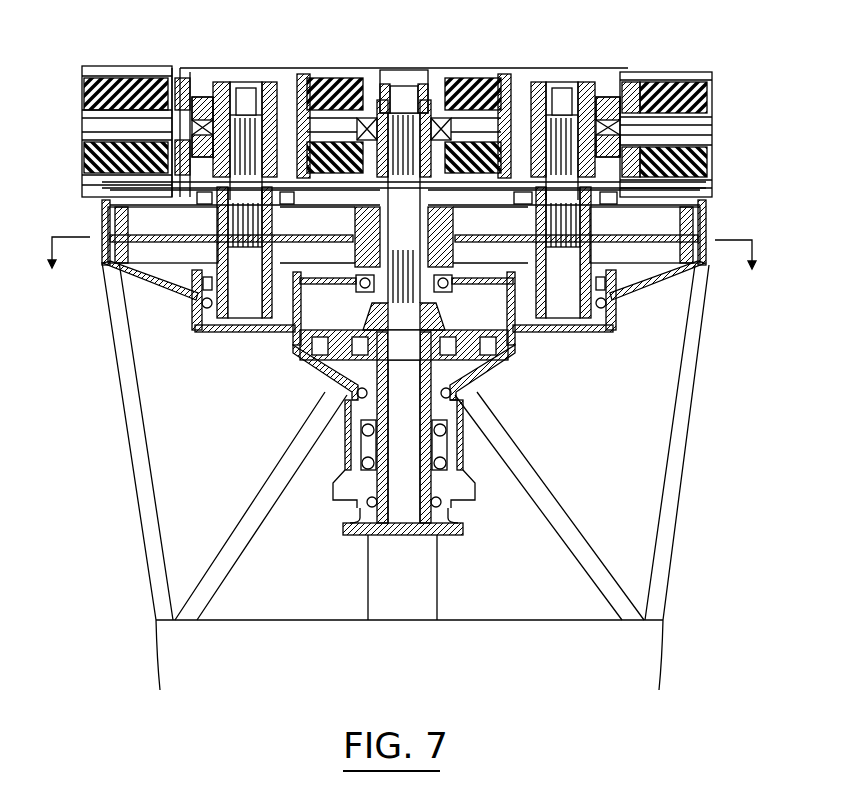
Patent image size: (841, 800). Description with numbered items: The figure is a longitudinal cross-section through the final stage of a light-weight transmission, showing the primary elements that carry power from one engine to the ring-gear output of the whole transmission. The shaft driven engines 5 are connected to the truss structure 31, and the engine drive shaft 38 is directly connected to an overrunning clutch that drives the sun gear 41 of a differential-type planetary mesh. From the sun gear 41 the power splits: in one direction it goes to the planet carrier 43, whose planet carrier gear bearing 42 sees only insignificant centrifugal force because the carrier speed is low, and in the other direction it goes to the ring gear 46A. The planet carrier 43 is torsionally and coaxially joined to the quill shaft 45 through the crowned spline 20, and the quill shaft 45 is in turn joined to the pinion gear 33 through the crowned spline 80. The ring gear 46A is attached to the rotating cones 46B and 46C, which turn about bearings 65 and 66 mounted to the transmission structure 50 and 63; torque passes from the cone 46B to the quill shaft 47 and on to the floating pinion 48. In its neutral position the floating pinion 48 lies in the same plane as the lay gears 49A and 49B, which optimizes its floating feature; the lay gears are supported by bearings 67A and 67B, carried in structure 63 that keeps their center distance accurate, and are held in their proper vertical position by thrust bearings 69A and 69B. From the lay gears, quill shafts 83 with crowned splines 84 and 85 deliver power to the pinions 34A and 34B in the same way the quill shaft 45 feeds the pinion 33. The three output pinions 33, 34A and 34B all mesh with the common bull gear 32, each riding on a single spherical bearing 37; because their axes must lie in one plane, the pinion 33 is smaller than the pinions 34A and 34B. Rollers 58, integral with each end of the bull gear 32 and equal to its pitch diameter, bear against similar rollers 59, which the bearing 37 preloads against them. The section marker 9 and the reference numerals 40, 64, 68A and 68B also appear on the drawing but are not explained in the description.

The shaft driven engine 5 is at (155, 640).
The section line 9- 9 is at (400, 270).
The crowned spline 20 is at (378, 318).
The truss structure 31 is at (403, 441).
The bull gear 32 is at (174, 68).
The output pinion 33 is at (428, 78).
The output pinion 34A is at (243, 105).
The output pinion 34B is at (522, 112).
The spherical bearing 37 is at (370, 118).
The engine drive shaft 38 is at (437, 600).
The lower bracket 40 is at (460, 472).
The sun gear 41 is at (462, 425).
The planet carrier gear bearing 42 is at (315, 362).
The planet carrier 43 is at (340, 380).
The quill shaft 45 is at (356, 206).
The ring gear 46A is at (500, 372).
The rotating cone 46B is at (502, 333).
The rotating cone 46C is at (470, 396).
The quill shaft 47 is at (452, 272).
The floating pinion 48 is at (444, 208).
The lay gear 49A is at (153, 245).
The lay gear 49B is at (657, 257).
The transmission structure 50 is at (345, 476).
The roller 58 is at (113, 68).
The roller 59 is at (660, 78).
The structure 63 is at (460, 286).
The lower bearing flange 64 is at (366, 503).
The bearing 65 is at (345, 425).
The bearing 66 is at (352, 264).
The bearing 67A is at (200, 206).
The bearing 67B is at (618, 204).
The upper helical gear 68A is at (84, 80).
The lower helical gear 68B is at (90, 135).
The thrust bearing 69A is at (208, 310).
The thrust bearing 69B is at (607, 312).
The crowned spline 80 is at (400, 110).
The quill shaft 83 is at (618, 132).
The crowned spline 84 is at (422, 275).
The crowned spline 85 is at (310, 92).